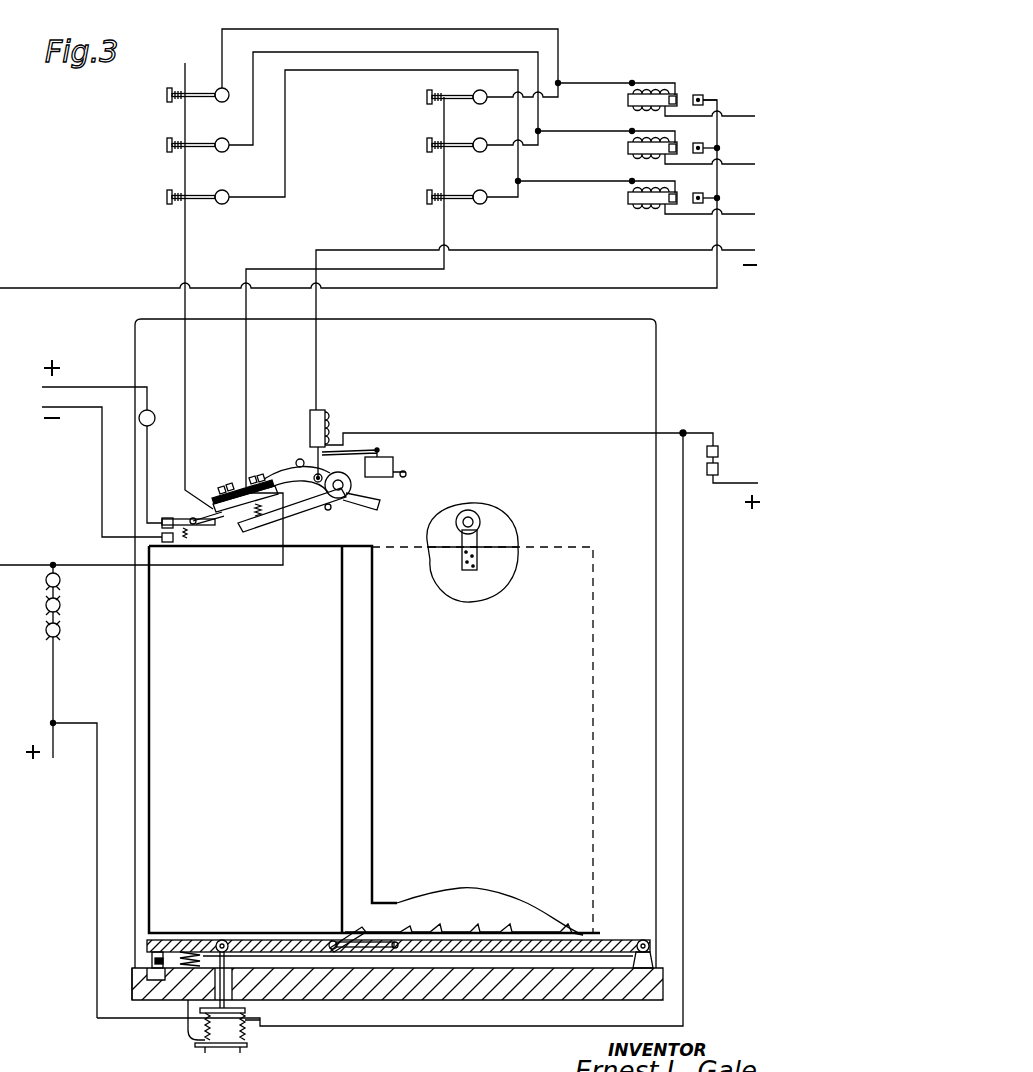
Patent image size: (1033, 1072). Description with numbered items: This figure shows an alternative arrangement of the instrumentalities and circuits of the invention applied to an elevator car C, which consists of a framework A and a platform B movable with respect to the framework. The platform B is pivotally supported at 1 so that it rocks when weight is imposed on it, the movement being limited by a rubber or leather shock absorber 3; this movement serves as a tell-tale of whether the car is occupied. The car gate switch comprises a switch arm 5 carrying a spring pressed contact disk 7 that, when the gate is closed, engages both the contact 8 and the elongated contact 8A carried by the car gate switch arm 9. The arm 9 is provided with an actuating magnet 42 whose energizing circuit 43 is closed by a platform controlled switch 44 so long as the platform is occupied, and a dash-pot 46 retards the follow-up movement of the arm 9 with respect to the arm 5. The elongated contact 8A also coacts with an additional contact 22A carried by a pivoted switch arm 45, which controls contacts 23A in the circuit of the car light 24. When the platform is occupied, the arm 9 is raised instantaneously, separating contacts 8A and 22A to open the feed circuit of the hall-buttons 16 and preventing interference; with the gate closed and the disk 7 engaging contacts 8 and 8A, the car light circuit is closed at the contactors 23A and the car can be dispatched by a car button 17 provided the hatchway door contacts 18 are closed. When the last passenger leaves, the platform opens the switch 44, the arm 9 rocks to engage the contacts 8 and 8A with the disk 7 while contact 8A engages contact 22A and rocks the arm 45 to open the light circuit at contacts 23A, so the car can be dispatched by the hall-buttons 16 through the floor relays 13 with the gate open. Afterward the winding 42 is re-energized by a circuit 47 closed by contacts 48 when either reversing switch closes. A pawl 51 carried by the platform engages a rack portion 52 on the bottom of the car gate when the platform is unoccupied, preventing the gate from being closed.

The pivot 1 is at (650, 944).
The shock absorber 3 is at (132, 985).
The switch arm 5 is at (290, 512).
The contact disk 7 is at (240, 515).
The contact 8 is at (266, 486).
The elongated contact 8A is at (226, 486).
The car gate switch arm 9 is at (288, 478).
The floor relays 13 is at (685, 78).
The hall-buttons 16 is at (167, 190).
The car buttons 17 is at (425, 190).
The hatchway door contacts 18 is at (62, 580).
The additional contact 22A is at (208, 510).
The contacts 23A is at (160, 535).
The car light 24 is at (139, 418).
The actuating magnet 42 is at (330, 415).
The energizing circuit 43 is at (95, 805).
The platform controlled switch 44 is at (250, 1032).
The pivoted switch arm 45 is at (182, 519).
The dash-pot 46 is at (395, 457).
The circuit 47 is at (698, 432).
The contacts 48 is at (718, 452).
The pawl 51 is at (345, 930).
The rack portion 52 is at (440, 930).
The framework A is at (418, 988).
The platform B is at (248, 940).
The elevator car C is at (630, 392).